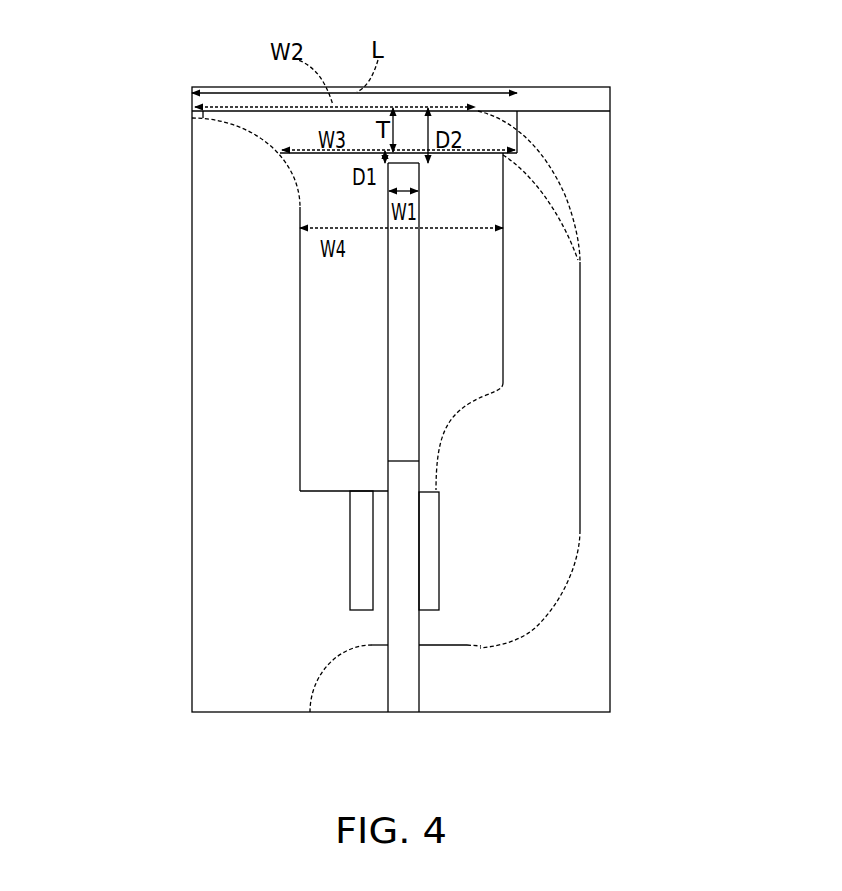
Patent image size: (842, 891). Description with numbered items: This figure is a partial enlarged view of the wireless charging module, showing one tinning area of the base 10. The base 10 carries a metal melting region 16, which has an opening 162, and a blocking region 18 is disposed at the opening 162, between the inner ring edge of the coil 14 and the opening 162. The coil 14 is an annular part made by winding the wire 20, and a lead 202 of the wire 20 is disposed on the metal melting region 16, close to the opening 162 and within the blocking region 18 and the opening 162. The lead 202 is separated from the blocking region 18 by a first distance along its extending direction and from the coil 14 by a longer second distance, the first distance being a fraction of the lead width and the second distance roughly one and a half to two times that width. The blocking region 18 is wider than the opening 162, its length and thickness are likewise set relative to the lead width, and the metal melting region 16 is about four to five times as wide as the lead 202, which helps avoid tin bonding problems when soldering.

The base 10 is at (518, 570).
The coil 14 is at (553, 95).
The metal melting region 16 is at (470, 358).
The opening 162 is at (478, 173).
The blocking region 18 is at (272, 122).
The wire 20 is at (402, 667).
The lead 202 is at (408, 412).